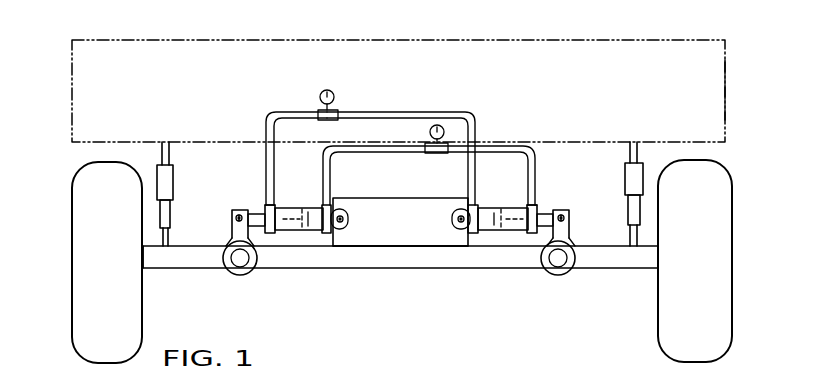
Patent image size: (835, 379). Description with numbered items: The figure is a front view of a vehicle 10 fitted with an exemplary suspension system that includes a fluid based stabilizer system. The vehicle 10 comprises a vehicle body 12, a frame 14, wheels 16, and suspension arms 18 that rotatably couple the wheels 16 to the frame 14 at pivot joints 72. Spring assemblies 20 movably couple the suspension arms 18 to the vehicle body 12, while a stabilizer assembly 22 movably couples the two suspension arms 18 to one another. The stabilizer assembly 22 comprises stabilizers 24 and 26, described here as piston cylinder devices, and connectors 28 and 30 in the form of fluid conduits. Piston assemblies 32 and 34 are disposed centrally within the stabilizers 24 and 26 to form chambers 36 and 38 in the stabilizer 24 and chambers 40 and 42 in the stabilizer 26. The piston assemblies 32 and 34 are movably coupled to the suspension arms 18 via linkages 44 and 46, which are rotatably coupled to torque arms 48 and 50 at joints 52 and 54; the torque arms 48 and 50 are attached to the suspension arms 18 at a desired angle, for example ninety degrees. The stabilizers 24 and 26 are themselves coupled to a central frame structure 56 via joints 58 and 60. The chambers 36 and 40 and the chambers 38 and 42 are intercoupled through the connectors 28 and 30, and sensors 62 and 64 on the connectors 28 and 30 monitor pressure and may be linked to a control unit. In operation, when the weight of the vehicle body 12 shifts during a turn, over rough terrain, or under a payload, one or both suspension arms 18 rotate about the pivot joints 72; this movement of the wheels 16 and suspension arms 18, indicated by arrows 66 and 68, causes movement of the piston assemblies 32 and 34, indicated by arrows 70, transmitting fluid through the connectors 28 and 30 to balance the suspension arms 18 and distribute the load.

The vehicle 10 is at (716, 32).
The vehicle body 12 is at (727, 90).
The frame 14 is at (388, 270).
The wheels 16 is at (72, 265).
The suspension arms 18 is at (180, 272).
The spring assemblies 20 is at (158, 180).
The stabilizer assembly 22 is at (273, 104).
The stabilizer 24 is at (298, 198).
The stabilizer 26 is at (495, 195).
The connector 28 is at (397, 112).
The connector 30 is at (503, 145).
The piston assembly 32 is at (302, 233).
The piston assembly 34 is at (497, 233).
The chamber 36 is at (280, 233).
The chamber 38 is at (317, 233).
The chamber 40 is at (480, 233).
The chamber 42 is at (512, 233).
The linkage 44 is at (257, 233).
The linkage 46 is at (532, 233).
The torque arm 48 is at (232, 237).
The torque arm 50 is at (572, 230).
The joint 52 is at (242, 212).
The joint 54 is at (562, 208).
The central frame structure 56 is at (433, 246).
The joint 58 is at (350, 217).
The joint 60 is at (455, 218).
The sensor 62 is at (332, 88).
The sensor 64 is at (443, 124).
The arrow 66 is at (153, 240).
The arrow 68 is at (235, 202).
The arrows 70 is at (260, 206).
The pivot joints 72 is at (240, 276).